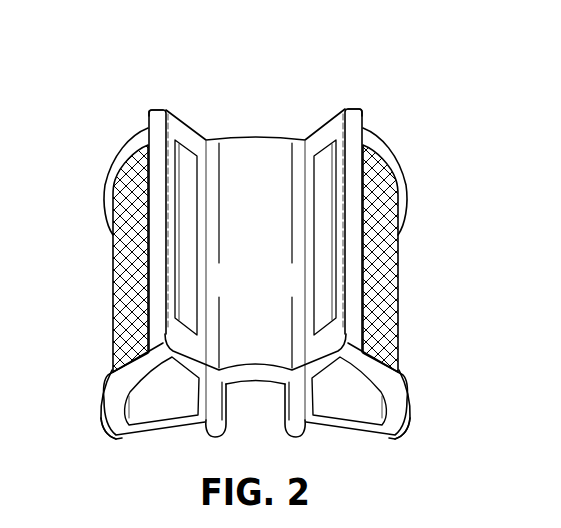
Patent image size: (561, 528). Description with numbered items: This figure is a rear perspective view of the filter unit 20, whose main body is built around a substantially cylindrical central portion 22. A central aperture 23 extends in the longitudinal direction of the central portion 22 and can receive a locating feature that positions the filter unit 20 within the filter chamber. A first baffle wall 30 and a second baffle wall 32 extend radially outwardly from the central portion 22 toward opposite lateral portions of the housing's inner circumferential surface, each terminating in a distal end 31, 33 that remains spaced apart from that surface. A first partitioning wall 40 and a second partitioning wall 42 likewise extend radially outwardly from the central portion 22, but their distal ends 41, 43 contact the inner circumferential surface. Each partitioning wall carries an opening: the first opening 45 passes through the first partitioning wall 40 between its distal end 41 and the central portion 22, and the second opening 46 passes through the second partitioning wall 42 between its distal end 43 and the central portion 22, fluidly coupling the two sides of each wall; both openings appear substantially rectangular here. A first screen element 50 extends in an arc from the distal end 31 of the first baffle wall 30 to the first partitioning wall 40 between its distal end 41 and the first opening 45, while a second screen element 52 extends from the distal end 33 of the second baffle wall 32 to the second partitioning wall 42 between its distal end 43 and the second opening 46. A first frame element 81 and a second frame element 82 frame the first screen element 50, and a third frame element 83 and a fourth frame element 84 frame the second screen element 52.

The filter unit 20 is at (95, 83).
The central portion 22 is at (257, 147).
The central aperture 23 is at (251, 402).
The first baffle wall 30 is at (352, 428).
The distal end 31 is at (405, 437).
The second baffle wall 32 is at (157, 433).
The distal end 33 is at (108, 433).
The first partitioning wall 40 is at (323, 129).
The distal end 41 is at (362, 110).
The second partitioning wall 42 is at (187, 128).
The distal end 43 is at (152, 109).
The first opening 45 is at (323, 177).
The second opening 46 is at (187, 176).
The first screen element 50 is at (398, 270).
The second screen element 52 is at (113, 285).
The first frame element 81 is at (405, 387).
The second frame element 82 is at (405, 176).
The third frame element 83 is at (108, 383).
The fourth frame element 84 is at (110, 162).